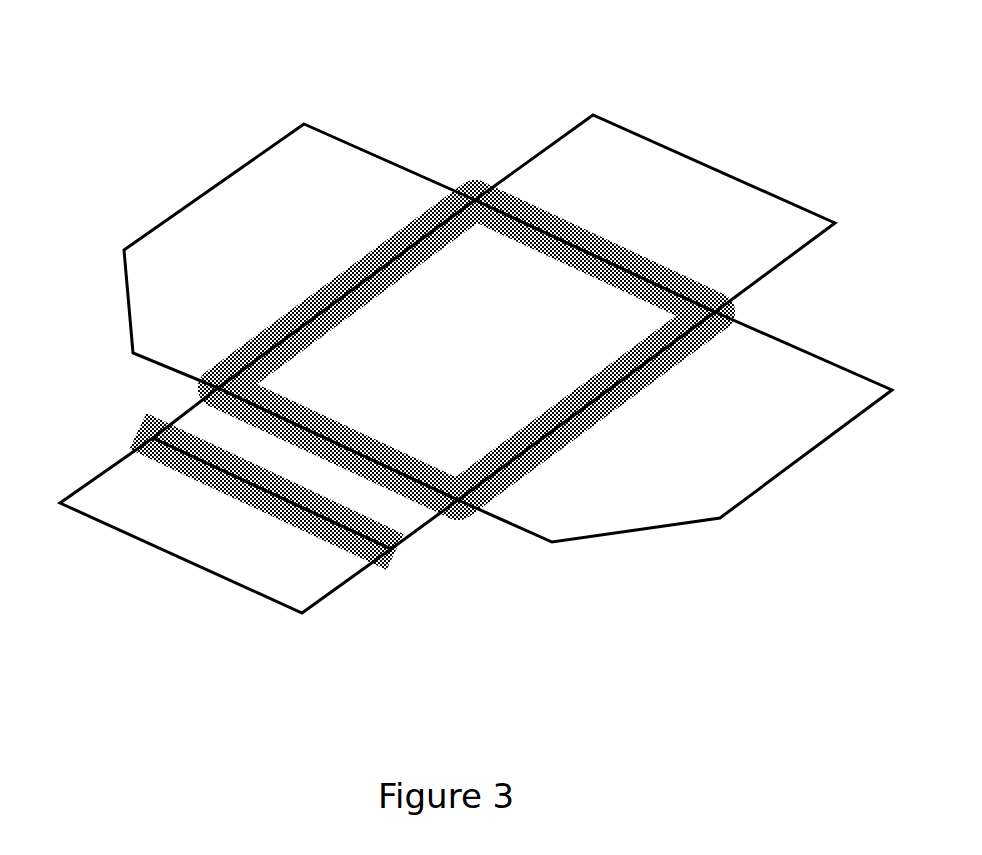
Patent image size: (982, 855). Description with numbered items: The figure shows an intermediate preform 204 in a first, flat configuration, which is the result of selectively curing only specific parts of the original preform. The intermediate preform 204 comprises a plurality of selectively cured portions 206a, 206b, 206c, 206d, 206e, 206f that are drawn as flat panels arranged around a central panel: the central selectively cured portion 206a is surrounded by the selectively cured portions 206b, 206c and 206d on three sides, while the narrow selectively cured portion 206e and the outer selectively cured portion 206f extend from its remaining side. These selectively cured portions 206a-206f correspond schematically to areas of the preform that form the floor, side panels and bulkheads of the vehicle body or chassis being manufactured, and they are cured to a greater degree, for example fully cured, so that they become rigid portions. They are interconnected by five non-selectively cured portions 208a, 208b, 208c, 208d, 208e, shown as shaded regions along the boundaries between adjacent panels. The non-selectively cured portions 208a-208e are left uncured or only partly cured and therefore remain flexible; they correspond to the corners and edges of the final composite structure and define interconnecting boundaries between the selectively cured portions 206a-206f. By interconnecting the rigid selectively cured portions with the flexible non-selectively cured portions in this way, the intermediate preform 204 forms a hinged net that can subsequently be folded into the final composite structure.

The intermediate preform 204 is at (196, 94).
The selectively cured portion 206a is at (506, 351).
The selectively cured portion 206b is at (307, 254).
The selectively cured portion 206c is at (705, 216).
The selectively cured portion 206d is at (733, 454).
The selectively cured portion 206e is at (432, 520).
The selectively cured portion 206f is at (258, 554).
The non-selectively cured portion 208a is at (259, 339).
The non-selectively cured portion 208b is at (538, 207).
The non-selectively cured portion 208c is at (697, 347).
The non-selectively cured portion 208d is at (252, 425).
The non-selectively cured portion 208e is at (315, 540).